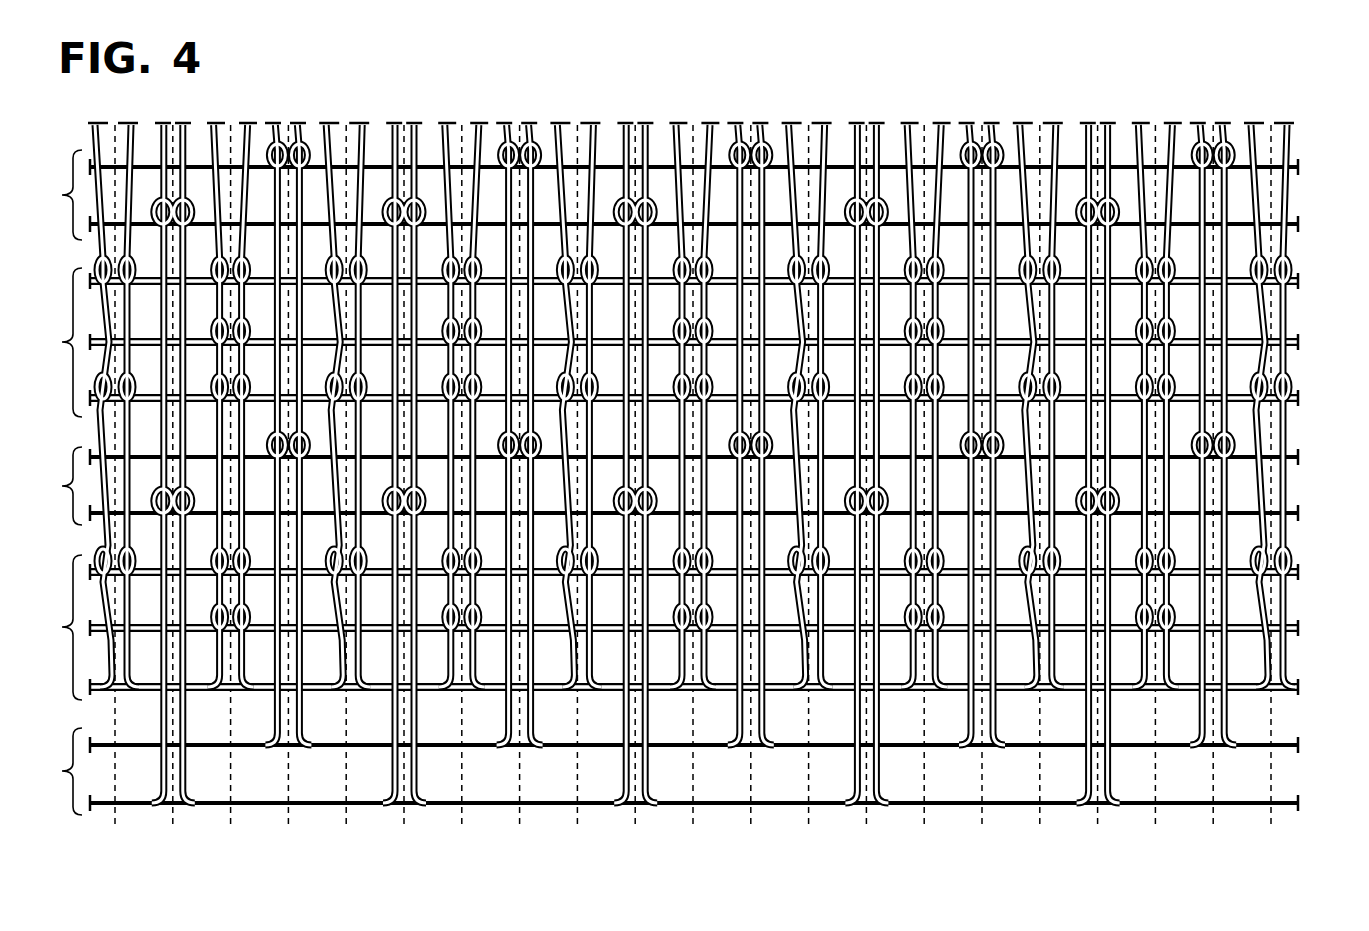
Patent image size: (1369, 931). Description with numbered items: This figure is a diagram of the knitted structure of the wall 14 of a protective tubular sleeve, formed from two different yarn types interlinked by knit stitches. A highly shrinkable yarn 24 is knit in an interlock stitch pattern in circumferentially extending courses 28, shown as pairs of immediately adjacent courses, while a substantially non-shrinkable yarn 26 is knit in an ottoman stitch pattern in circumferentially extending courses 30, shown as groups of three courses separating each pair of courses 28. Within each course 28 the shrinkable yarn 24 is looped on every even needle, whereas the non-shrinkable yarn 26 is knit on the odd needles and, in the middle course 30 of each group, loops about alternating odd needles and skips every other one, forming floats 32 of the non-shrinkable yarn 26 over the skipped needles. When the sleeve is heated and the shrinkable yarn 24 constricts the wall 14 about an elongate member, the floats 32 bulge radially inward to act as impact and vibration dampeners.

The knitted wall 14 is at (1287, 121).
The shrinkable yarn 24 is at (1338, 780).
The non-shrinkable yarn 26 is at (1338, 640).
The knit courses of shrinkable yarn 28 is at (52, 482).
The knit courses of non-shrinkable yarn 30 is at (52, 484).
The floats 32 is at (1074, 333).